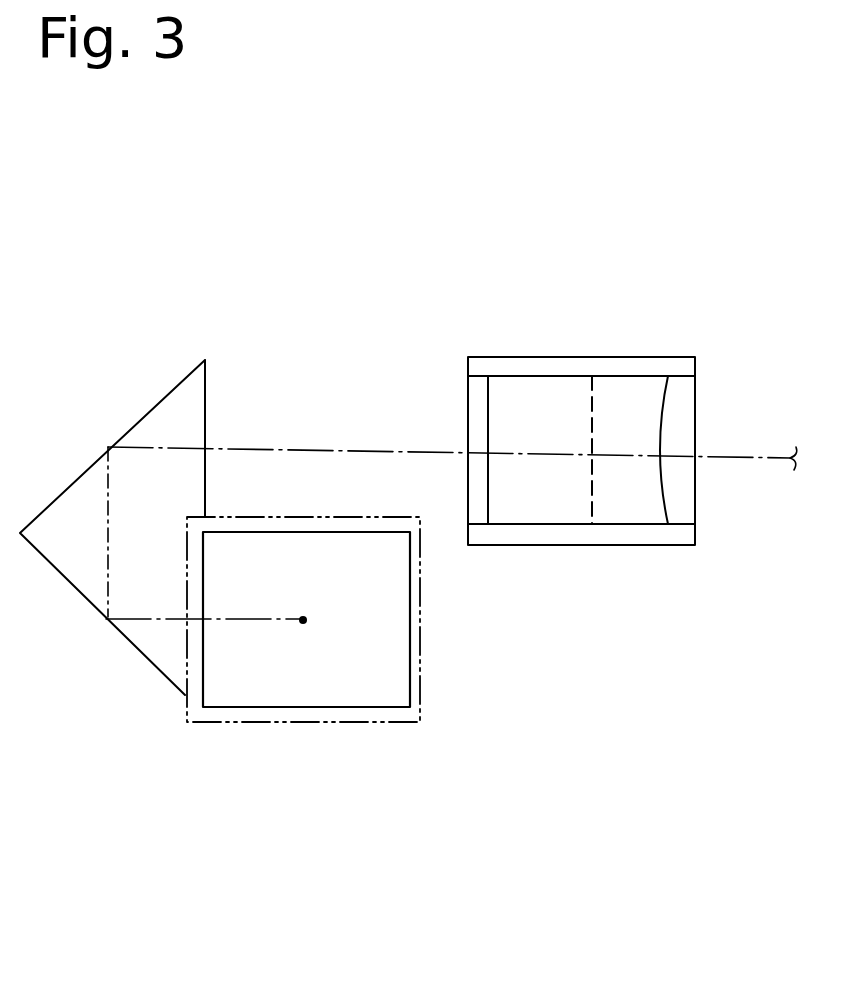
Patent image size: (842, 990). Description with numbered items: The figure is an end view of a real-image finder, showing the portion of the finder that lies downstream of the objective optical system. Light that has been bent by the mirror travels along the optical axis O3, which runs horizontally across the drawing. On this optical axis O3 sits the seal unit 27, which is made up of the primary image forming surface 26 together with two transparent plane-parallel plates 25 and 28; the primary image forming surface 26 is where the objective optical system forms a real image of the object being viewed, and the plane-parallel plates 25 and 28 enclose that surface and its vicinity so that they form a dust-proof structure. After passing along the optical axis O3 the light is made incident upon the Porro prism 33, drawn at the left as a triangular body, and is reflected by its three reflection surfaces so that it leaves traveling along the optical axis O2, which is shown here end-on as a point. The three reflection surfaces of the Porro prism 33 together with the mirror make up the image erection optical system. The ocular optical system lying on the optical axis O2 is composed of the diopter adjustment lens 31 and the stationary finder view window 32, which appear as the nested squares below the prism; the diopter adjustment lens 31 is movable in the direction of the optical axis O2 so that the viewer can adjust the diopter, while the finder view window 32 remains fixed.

The transparent plane-parallel plate 25 is at (687, 398).
The primary image forming surface 26 is at (592, 412).
The seal unit 27 is at (587, 372).
The transparent plane-parallel plate 28 is at (475, 400).
The diopter adjustment lens 31 is at (303, 654).
The stationary finder view window 32 is at (292, 718).
The Porro prism 33 is at (157, 403).
The optical axis O2 is at (305, 622).
The optical axis O3 is at (318, 449).